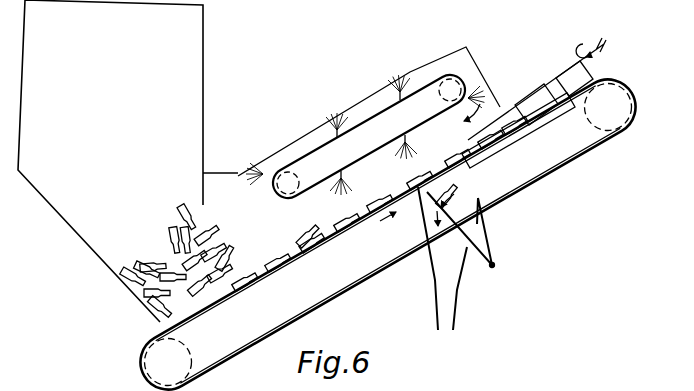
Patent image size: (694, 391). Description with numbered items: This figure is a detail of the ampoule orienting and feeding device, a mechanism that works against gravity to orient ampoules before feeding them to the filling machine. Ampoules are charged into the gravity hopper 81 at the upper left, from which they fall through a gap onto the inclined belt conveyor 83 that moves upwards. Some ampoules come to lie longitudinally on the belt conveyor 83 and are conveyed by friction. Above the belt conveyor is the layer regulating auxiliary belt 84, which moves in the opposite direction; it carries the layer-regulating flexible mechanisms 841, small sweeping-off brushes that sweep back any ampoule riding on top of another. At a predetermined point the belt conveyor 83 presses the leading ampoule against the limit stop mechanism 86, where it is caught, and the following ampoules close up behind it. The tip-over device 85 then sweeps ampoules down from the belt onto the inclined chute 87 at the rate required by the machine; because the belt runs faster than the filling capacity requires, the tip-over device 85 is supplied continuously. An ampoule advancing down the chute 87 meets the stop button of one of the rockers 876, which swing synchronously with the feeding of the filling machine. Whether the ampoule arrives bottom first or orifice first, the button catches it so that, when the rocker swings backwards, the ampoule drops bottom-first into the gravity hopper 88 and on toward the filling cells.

The gravity hopper 81 is at (203, 52).
The belt conveyor 83 is at (413, 200).
The layer regulating auxiliary belt 84 is at (368, 118).
The layer-regulating flexible mechanisms 841 is at (397, 74).
The tip-over device 85 is at (531, 94).
The limit stop mechanism 86 is at (576, 83).
The inclined chute 87 is at (548, 120).
The rockers 876 is at (492, 238).
The gravity hopper 88 is at (456, 313).